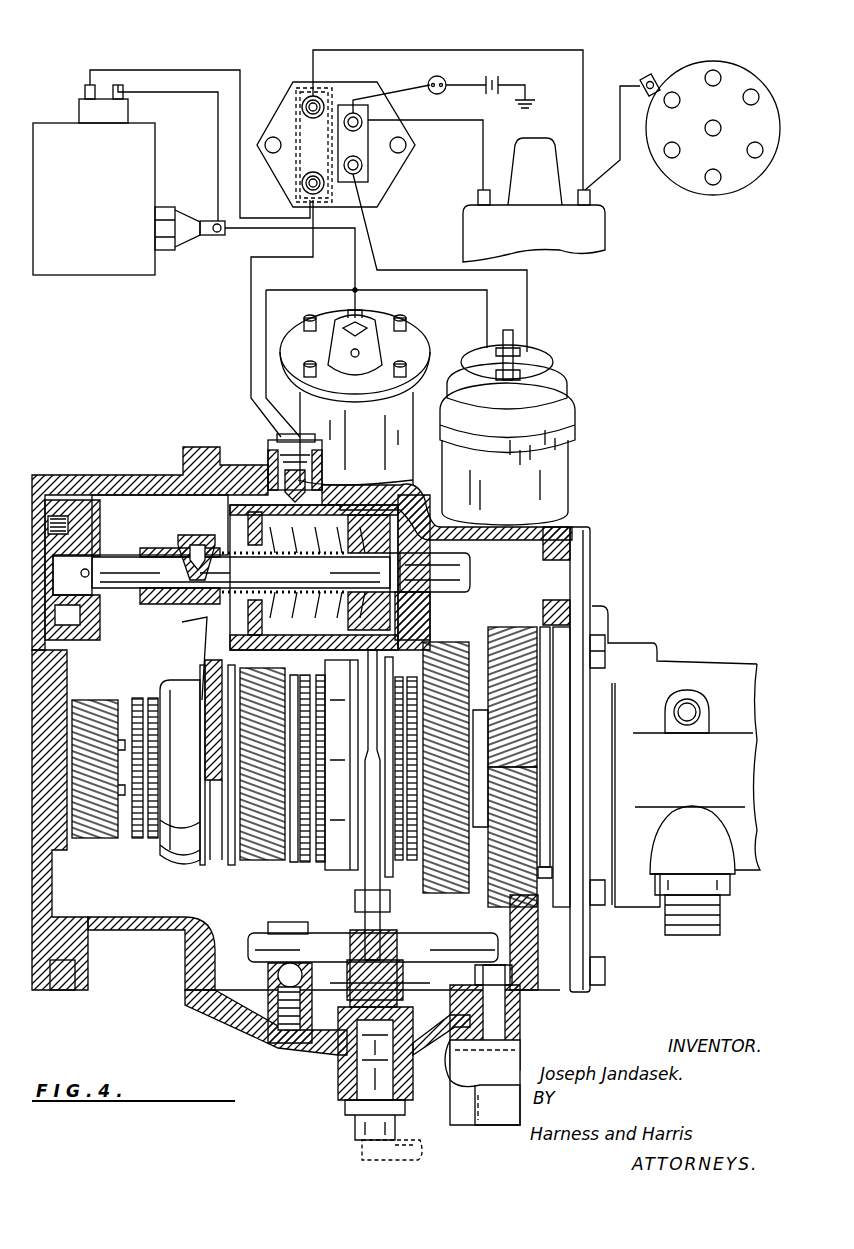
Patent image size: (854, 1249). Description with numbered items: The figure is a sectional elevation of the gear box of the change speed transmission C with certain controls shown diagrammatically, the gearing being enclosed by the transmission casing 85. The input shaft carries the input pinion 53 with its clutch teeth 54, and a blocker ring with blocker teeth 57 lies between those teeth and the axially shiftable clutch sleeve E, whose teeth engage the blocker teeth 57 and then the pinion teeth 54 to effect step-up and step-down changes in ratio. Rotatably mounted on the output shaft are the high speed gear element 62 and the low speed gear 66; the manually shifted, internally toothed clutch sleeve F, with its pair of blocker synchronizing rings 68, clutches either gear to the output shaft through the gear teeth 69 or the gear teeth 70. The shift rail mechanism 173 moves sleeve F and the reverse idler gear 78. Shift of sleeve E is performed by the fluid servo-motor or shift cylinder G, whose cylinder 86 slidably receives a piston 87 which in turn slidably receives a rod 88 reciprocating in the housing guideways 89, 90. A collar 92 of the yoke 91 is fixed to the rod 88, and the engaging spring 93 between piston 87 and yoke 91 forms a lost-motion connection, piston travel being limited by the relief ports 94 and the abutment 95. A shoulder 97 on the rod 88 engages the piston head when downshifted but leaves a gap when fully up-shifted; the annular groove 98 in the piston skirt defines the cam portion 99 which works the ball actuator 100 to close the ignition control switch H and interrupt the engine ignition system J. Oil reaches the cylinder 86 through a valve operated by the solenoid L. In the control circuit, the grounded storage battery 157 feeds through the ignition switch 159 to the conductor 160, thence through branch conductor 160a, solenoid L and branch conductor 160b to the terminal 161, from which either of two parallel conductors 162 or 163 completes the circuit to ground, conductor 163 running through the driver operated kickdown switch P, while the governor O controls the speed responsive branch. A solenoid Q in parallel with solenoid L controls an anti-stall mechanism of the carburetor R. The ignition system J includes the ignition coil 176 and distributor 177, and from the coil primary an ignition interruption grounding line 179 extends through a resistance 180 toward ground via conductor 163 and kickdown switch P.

The input pinion 53 is at (88, 700).
The clutch teeth 54 is at (137, 698).
The blocker teeth 57 is at (153, 698).
The gear element 62 is at (265, 862).
The low speed gear 66 is at (490, 890).
The blocker synchronizing rings 68 is at (312, 664).
The gear teeth 69 is at (298, 864).
The gear teeth 70 is at (425, 880).
The reverse idler gear 78 is at (500, 916).
The housing 85 is at (78, 478).
The cylinder 86 is at (395, 498).
The piston 87 is at (398, 632).
The rod 88 is at (221, 575).
The housing guideway 89 is at (96, 530).
The housing guideway 90 is at (430, 572).
The yoke 91 is at (200, 640).
The collar 92 is at (165, 595).
The engaging spring 93 is at (222, 535).
The relief ports 94 is at (345, 645).
The abutment 95 is at (255, 654).
The shoulder 97 is at (408, 578).
The annular groove 98 is at (320, 500).
The cam portion 99 is at (322, 470).
The ball actuator 100 is at (265, 485).
The storage battery 157 is at (500, 78).
The ignition switch 159 is at (412, 73).
The conductor 160 is at (440, 93).
The branch conductor 160a is at (530, 290).
The branch conductor 160b is at (440, 263).
The terminal 161 is at (352, 290).
The conductor 162 is at (345, 305).
The conductor 163 is at (250, 232).
The shift rail mechanism 173 is at (325, 930).
The ignition coil 176 is at (597, 230).
The distributor 177 is at (725, 61).
The ignition interruption grounding line 179 is at (398, 50).
The resistance 180 is at (303, 122).
The transmission gear box C is at (125, 478).
The clutch sleeve E is at (185, 856).
The clutch sleeve F is at (360, 880).
The shift cylinder G is at (424, 514).
The ignition control switch H is at (268, 447).
The engine ignition system J is at (356, 48).
The solenoid L is at (572, 462).
The governor O is at (420, 320).
The kickdown switch P is at (180, 245).
The solenoid Q is at (85, 107).
The carburetor R is at (90, 266).